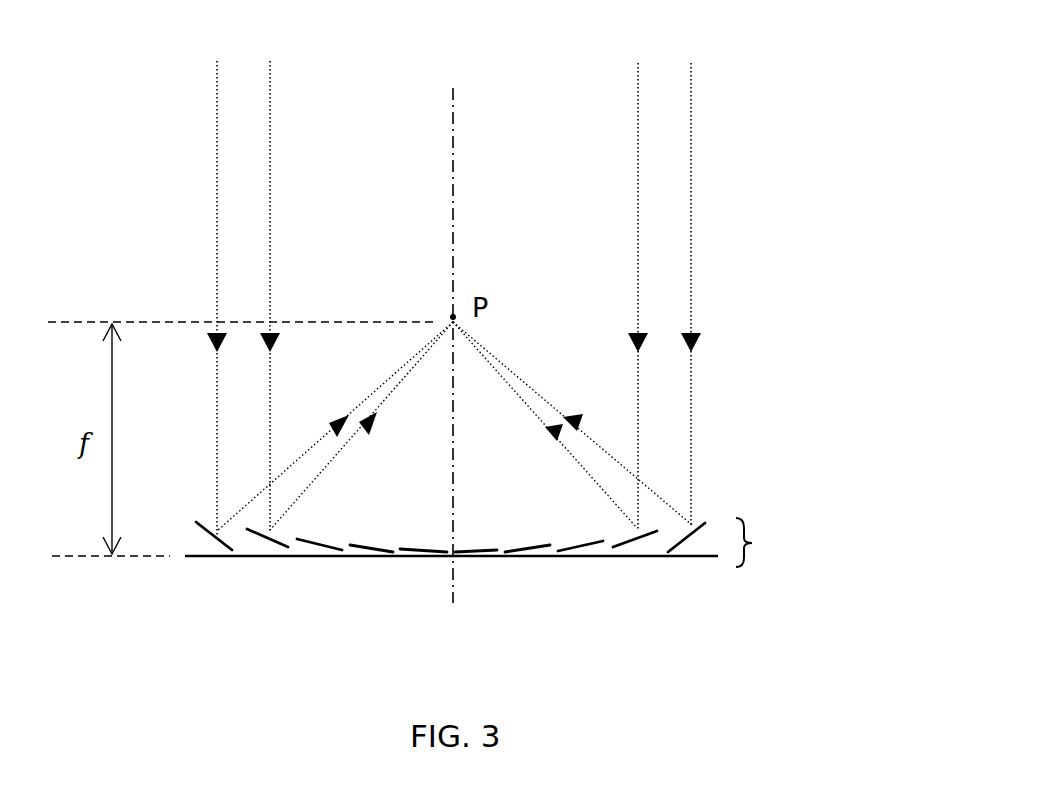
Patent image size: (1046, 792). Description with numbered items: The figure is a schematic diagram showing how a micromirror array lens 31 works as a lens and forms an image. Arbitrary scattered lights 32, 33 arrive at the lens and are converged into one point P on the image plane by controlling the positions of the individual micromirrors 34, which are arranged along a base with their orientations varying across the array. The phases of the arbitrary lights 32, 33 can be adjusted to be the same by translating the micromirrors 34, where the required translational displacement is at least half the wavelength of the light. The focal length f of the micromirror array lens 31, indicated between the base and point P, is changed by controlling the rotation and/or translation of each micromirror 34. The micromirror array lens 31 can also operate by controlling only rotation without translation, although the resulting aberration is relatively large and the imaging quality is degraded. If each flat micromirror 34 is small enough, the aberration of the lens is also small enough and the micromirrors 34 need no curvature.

The micromirror array lens 31 is at (773, 543).
The arbitrary scattered light 32 is at (623, 87).
The arbitrary scattered light 33 is at (707, 130).
The micromirror 34 is at (193, 533).